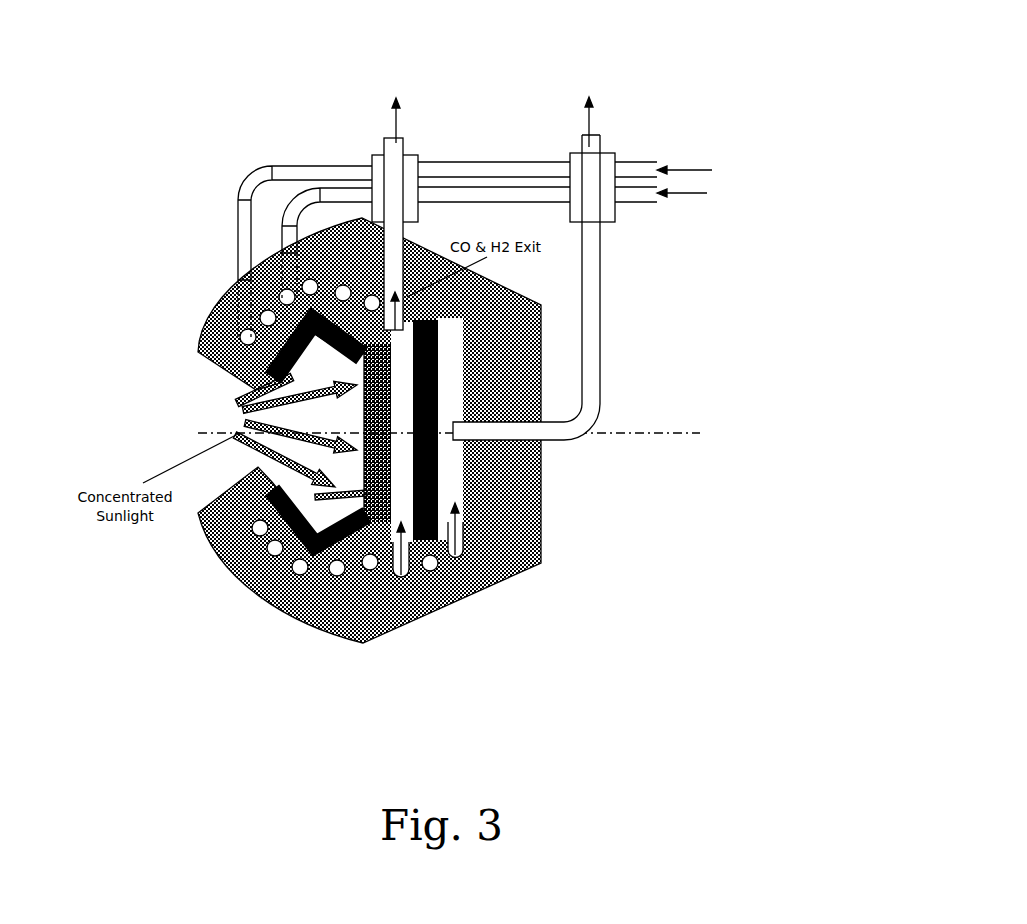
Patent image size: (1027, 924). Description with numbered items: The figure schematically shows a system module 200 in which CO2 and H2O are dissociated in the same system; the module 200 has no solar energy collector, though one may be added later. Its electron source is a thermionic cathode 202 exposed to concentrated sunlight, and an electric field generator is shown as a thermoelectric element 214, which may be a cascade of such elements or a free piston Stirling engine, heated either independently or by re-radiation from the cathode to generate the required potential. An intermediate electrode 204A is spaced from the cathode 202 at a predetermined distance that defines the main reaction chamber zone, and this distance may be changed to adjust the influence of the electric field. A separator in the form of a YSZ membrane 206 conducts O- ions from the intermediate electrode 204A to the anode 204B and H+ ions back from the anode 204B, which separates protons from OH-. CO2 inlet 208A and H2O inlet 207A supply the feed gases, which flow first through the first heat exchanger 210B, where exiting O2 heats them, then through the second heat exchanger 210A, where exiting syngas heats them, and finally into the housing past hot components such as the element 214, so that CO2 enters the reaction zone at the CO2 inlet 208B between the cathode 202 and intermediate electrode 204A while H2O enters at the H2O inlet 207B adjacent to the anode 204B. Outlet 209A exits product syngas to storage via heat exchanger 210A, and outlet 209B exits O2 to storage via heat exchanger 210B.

The system module 200 is at (244, 57).
The thermionic cathode 202 is at (287, 532).
The intermediate electrode 204A is at (440, 425).
The anode 204B is at (440, 495).
The YSZ membrane 206 is at (440, 465).
The H2O inlet 207A is at (741, 165).
The H2O inlet 207B is at (468, 560).
The CO2 inlet 208A is at (741, 210).
The CO2 inlet 208B is at (407, 577).
The syngas outlet 209A is at (479, 120).
The O2 outlet 209B is at (669, 117).
The second heat exchanger 210A is at (372, 160).
The first heat exchanger 210B is at (617, 213).
The thermoelectric element 214 is at (255, 357).